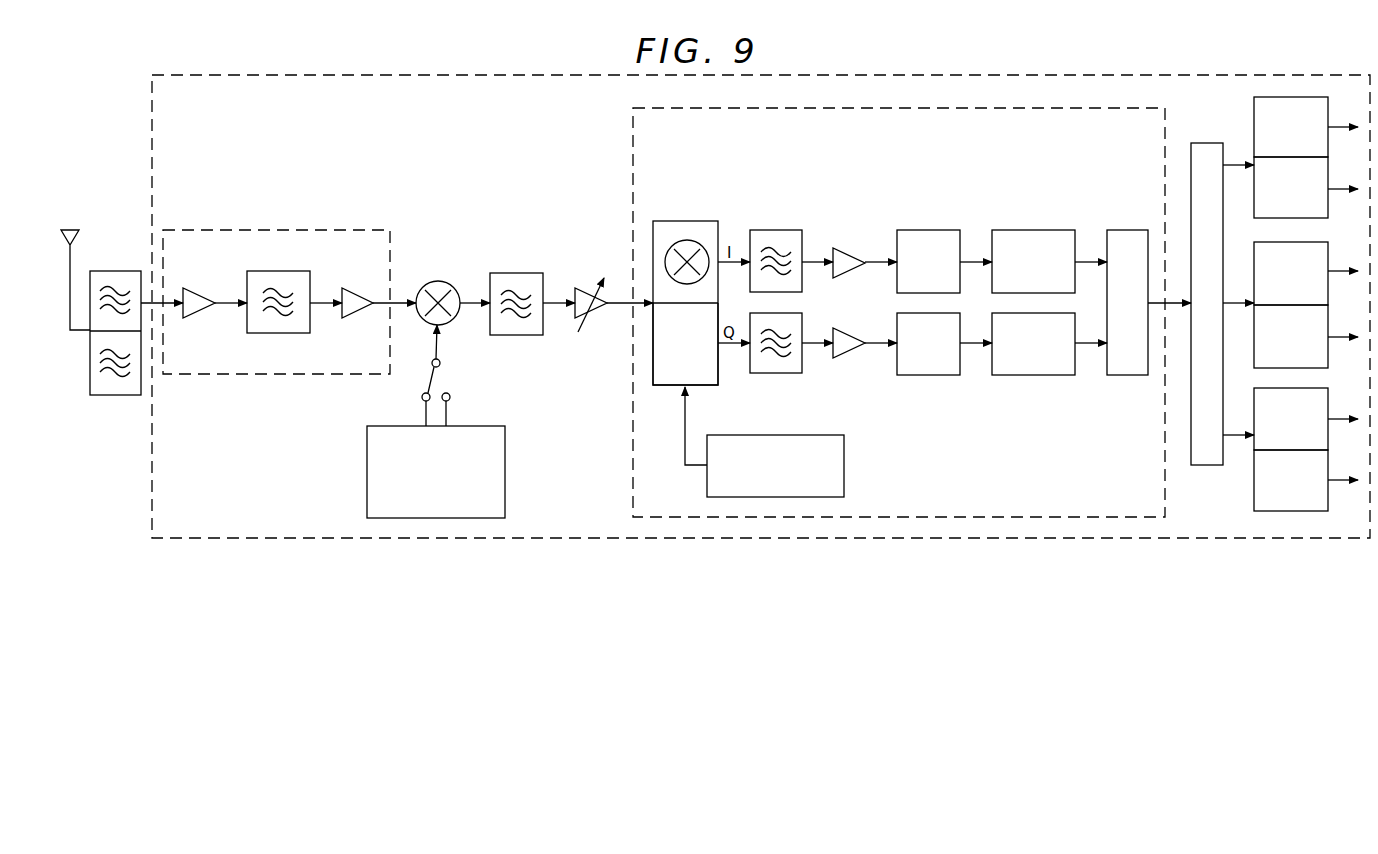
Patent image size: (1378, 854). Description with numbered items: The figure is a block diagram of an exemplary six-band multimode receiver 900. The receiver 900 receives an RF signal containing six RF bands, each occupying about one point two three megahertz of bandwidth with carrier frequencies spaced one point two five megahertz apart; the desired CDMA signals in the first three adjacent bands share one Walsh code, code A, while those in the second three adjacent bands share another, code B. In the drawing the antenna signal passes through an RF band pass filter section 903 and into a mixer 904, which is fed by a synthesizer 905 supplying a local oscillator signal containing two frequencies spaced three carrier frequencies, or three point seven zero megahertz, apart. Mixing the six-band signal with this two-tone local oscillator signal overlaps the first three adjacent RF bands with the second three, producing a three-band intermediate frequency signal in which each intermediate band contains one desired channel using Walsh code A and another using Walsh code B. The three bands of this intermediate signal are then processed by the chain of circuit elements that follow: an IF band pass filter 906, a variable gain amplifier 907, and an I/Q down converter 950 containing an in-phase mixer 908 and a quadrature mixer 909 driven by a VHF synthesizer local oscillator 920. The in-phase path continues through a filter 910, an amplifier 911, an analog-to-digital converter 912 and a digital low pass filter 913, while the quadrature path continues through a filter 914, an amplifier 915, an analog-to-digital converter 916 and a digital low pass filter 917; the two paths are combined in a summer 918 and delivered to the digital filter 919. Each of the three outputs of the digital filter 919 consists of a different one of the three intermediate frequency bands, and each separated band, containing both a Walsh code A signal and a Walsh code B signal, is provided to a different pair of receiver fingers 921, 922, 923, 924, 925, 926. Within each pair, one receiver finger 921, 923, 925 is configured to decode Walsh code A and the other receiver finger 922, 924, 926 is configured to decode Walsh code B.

The receiver 900 is at (152, 189).
The RF band pass filter section 903 is at (272, 230).
The mixer 904 is at (438, 281).
The UHF 2 or 1 tone synthesizer 905 is at (367, 478).
The circuit element (IF band pass filter) 906 is at (516, 273).
The circuit element (variable gain amplifier) 907 is at (596, 320).
The circuit element (I/Q down converter mixer) 908 is at (689, 221).
The circuit element (I/Q down converter mixer) 909 is at (673, 385).
The circuit element (I channel filter) 910 is at (773, 230).
The circuit element (I channel amplifier) 911 is at (855, 251).
The circuit element (I channel A/D converter) 912 is at (927, 230).
The circuit element (I channel digital low pass filter) 913 is at (1066, 230).
The circuit element (Q channel filter) 914 is at (778, 373).
The circuit element (Q channel amplifier) 915 is at (852, 358).
The circuit element (Q channel A/D converter) 916 is at (930, 376).
The circuit element (Q channel digital low pass filter) 917 is at (1070, 377).
The circuit element (summer) 918 is at (1126, 230).
The digital filter 919 is at (1206, 143).
The circuit element (VHF synthesizer local oscillator) 920 is at (845, 466).
The receiver finger 921 is at (1306, 127).
The receiver finger 922 is at (1306, 187).
The receiver finger 923 is at (1306, 273).
The receiver finger 924 is at (1306, 336).
The receiver finger 925 is at (1306, 419).
The receiver finger 926 is at (1306, 480).
The I/Q down converter 950 is at (633, 453).